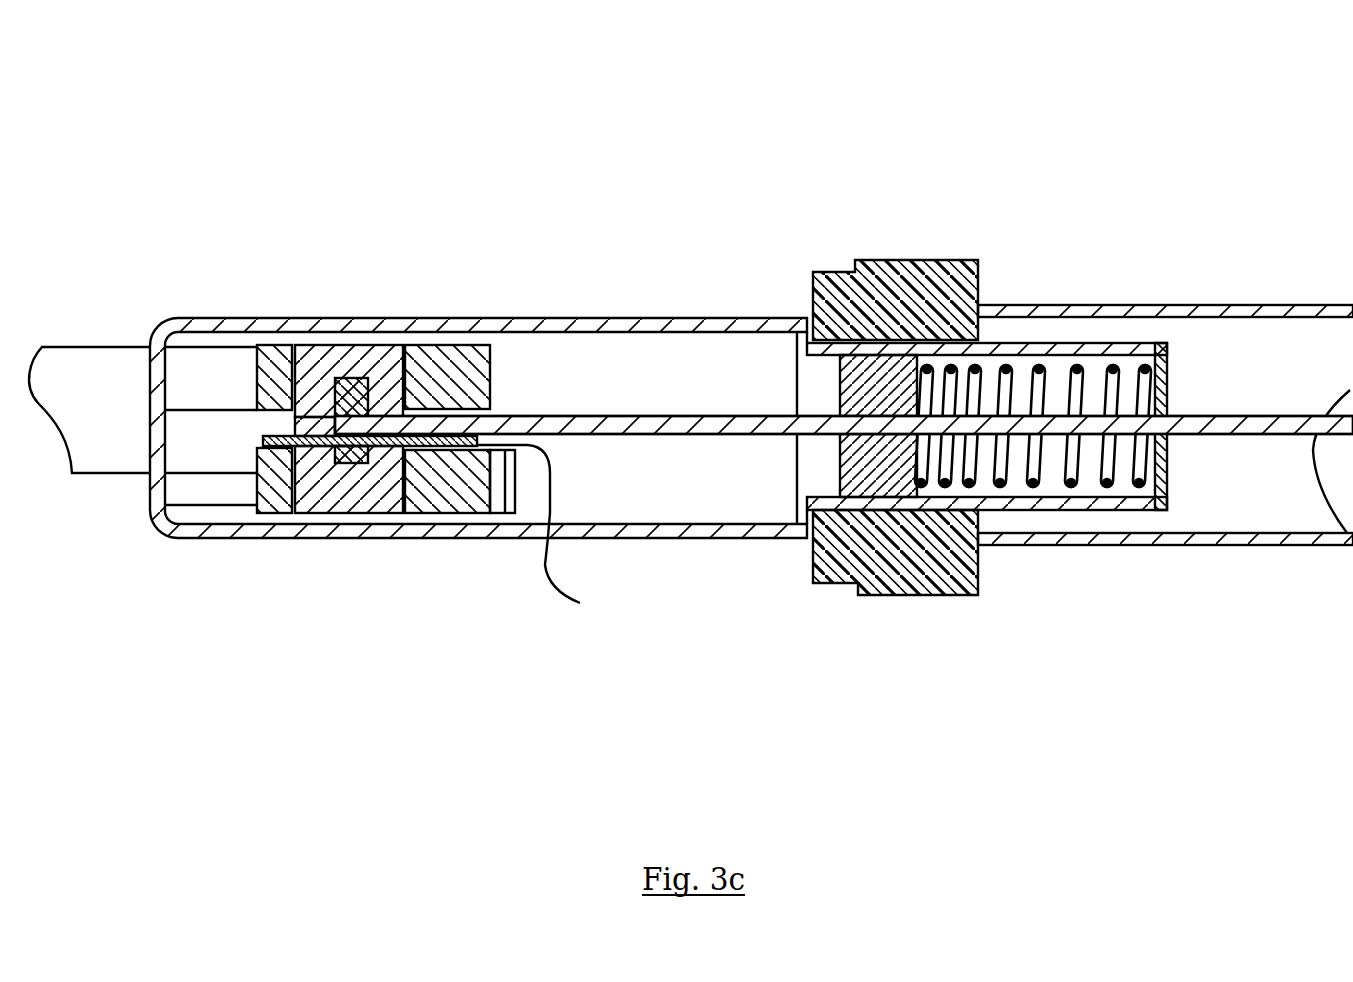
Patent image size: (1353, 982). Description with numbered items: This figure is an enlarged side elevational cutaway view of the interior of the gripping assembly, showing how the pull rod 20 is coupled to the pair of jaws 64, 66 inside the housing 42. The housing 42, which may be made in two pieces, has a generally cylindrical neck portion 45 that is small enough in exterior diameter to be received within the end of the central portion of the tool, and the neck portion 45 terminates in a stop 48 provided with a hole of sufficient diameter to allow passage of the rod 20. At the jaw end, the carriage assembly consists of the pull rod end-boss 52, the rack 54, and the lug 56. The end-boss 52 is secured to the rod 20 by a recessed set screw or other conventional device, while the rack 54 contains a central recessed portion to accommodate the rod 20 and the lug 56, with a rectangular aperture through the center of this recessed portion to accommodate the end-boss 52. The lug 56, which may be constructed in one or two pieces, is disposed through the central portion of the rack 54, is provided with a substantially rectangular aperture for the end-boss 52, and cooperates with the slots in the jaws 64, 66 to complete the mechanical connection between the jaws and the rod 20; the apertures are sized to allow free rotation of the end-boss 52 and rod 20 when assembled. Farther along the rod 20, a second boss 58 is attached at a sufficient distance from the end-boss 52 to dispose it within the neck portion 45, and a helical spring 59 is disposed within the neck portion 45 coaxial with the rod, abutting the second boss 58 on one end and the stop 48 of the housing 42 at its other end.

The rod 20 is at (612, 420).
The housing 42 is at (485, 327).
The neck portion 45 is at (997, 350).
The stop 48 is at (1170, 380).
The pull rod end-boss 52 is at (350, 405).
The rack 54 is at (453, 534).
The lug 56 is at (347, 347).
The second boss 58 is at (865, 480).
The helical spring 59 is at (1078, 478).
The jaw 64 is at (428, 348).
The jaw 66 is at (422, 503).